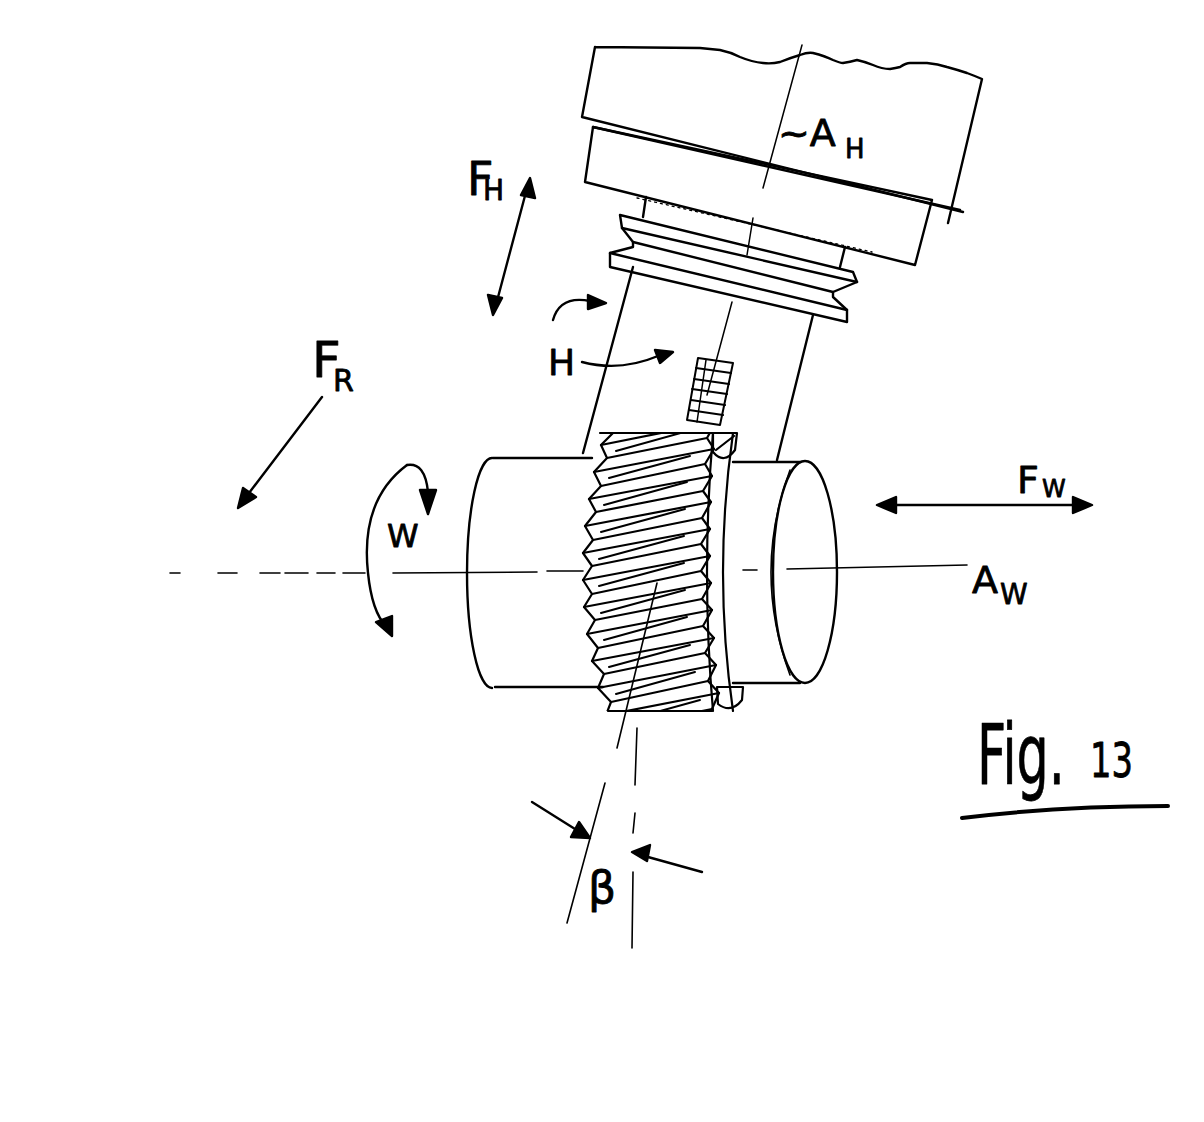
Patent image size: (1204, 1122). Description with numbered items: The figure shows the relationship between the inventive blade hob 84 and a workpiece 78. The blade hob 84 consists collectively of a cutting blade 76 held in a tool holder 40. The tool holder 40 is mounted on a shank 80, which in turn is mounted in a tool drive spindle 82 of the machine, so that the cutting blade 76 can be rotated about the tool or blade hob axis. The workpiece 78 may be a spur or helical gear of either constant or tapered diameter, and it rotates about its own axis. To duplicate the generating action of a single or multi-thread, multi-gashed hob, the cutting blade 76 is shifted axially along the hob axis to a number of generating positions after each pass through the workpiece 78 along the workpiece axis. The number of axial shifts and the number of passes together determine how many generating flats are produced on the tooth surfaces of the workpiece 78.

The tool holder 40 is at (812, 363).
The cutting blade 76 is at (723, 410).
The workpiece 78 is at (700, 722).
The shank 80 is at (847, 295).
The tool drive spindle 82 is at (910, 232).
The blade hob 84 is at (822, 399).